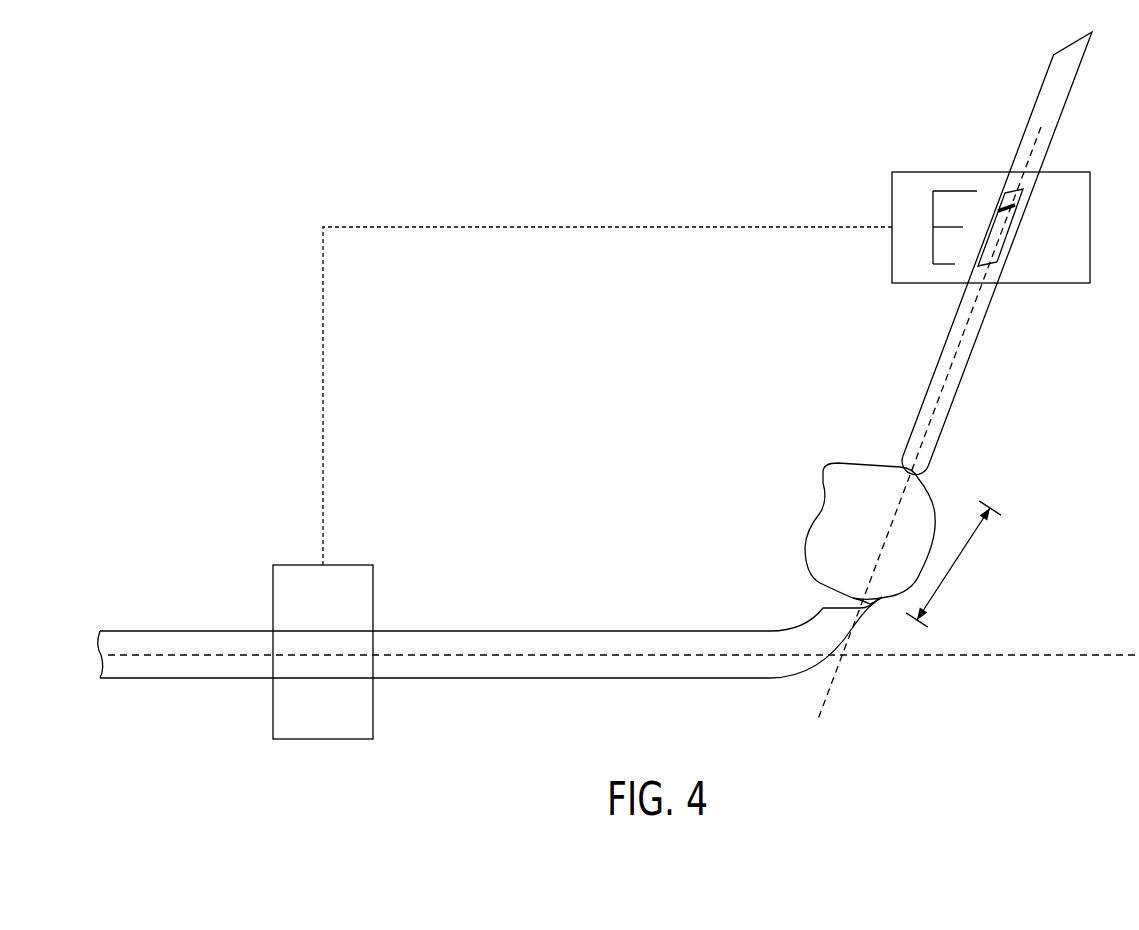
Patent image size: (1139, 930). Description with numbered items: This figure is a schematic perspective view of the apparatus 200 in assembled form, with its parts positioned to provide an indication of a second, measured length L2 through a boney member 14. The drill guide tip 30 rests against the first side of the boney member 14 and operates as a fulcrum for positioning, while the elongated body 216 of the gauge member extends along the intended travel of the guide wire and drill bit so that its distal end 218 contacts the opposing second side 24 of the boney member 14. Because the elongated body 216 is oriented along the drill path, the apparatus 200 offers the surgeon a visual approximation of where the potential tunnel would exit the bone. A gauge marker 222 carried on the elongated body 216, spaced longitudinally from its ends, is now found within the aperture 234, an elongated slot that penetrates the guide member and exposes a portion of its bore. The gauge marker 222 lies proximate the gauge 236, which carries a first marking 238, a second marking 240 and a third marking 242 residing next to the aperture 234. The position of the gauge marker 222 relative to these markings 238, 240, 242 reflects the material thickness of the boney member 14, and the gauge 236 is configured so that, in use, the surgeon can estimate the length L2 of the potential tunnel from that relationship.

The apparatus 200 is at (270, 108).
The boney member 14 is at (805, 479).
The second side 24 is at (862, 444).
The tip 30 is at (894, 625).
The elongated body 216 is at (968, 363).
The distal end 218 is at (951, 449).
The gauge marker 222 is at (1015, 208).
The aperture 234 is at (1013, 190).
The gauge 236 is at (925, 245).
The first marking 238 is at (947, 190).
The second marking 240 is at (950, 226).
The third marking 242 is at (952, 263).
The length L2 is at (953, 564).